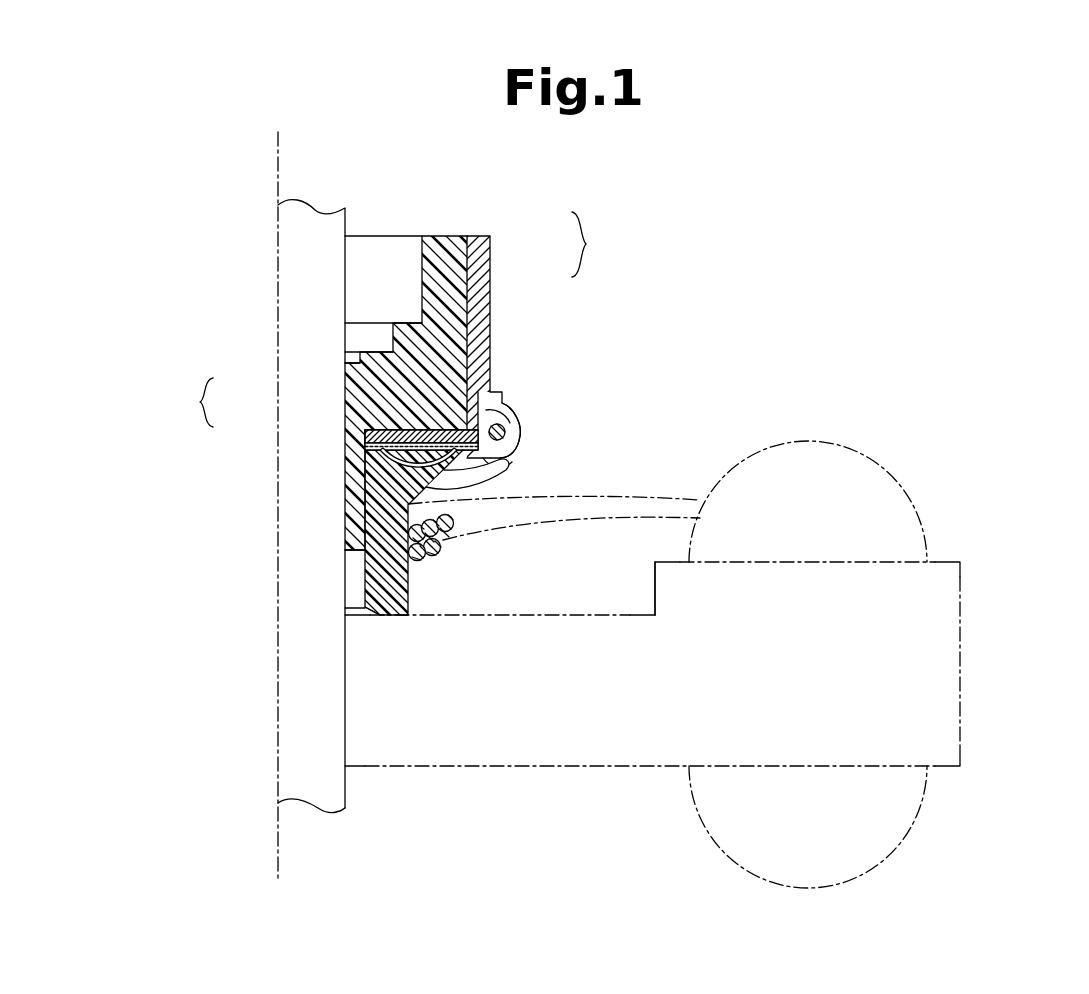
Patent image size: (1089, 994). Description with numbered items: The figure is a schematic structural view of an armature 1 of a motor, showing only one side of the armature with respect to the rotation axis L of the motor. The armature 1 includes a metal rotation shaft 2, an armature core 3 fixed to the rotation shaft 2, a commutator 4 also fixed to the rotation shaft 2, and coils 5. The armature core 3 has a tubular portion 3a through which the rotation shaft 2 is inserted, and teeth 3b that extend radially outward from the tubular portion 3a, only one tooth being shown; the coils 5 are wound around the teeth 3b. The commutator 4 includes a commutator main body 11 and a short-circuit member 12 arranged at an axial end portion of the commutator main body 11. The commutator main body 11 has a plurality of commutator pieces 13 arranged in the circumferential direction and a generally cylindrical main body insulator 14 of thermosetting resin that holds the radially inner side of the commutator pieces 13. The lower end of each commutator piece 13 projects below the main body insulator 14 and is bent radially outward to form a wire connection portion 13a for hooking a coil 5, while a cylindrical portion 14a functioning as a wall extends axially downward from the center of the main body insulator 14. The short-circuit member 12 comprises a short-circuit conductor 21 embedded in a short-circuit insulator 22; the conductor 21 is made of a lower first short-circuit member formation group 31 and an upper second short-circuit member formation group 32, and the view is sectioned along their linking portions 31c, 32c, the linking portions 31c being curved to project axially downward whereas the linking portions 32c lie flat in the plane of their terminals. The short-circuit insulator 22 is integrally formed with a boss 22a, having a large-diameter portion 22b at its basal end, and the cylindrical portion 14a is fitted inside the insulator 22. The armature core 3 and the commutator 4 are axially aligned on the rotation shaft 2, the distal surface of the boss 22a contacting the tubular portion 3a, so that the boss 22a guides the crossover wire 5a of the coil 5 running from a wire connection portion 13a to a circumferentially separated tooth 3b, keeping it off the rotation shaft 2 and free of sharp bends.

The armature 1 is at (718, 258).
The rotation shaft 2 is at (312, 208).
The armature core 3 is at (960, 603).
The tubular portion 3a is at (408, 608).
The tooth 3b is at (842, 562).
The commutator 4 is at (592, 244).
The coil 5 is at (735, 465).
The crossover wire 5a is at (458, 543).
The commutator main body 11 is at (492, 257).
The short-circuit member 12 is at (437, 422).
The commutator piece 13 is at (470, 237).
The wire connection portion 13a is at (510, 413).
The main body insulator 14 is at (405, 335).
The cylindrical portion 14a is at (352, 497).
The short-circuit conductor 21 is at (325, 414).
The short-circuit insulator 22 is at (385, 512).
The boss 22a is at (372, 565).
The large-diameter portion 22b is at (486, 489).
The first short-circuit member formation group 31 is at (376, 450).
The linking portion 31c is at (392, 470).
The second short-circuit member formation group 32 is at (392, 432).
The linking portion 32c is at (380, 424).
The rotation axis L is at (278, 682).